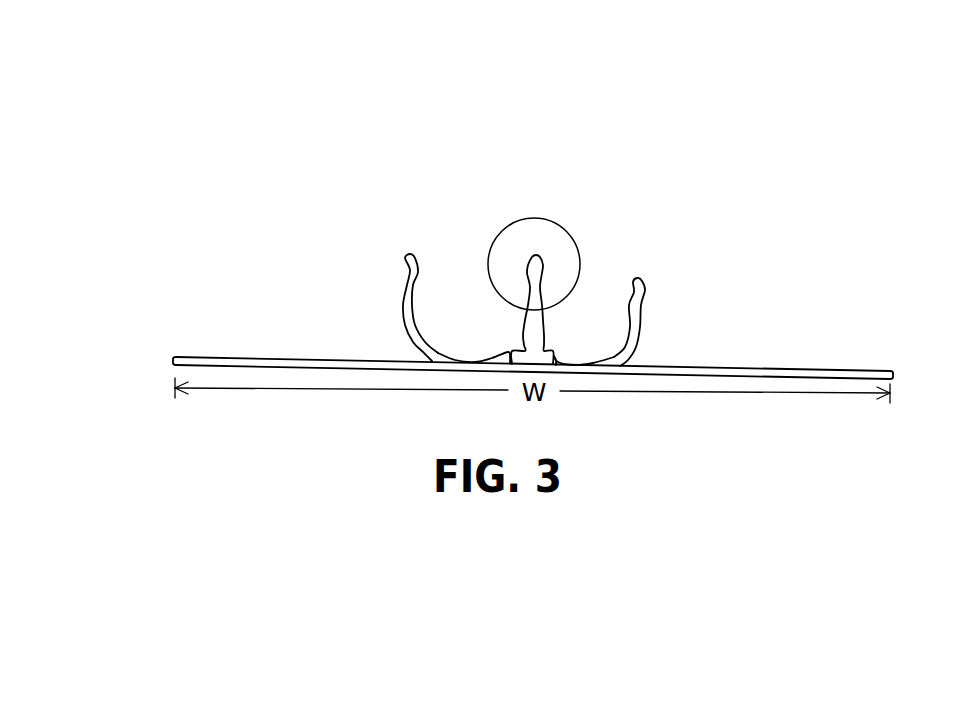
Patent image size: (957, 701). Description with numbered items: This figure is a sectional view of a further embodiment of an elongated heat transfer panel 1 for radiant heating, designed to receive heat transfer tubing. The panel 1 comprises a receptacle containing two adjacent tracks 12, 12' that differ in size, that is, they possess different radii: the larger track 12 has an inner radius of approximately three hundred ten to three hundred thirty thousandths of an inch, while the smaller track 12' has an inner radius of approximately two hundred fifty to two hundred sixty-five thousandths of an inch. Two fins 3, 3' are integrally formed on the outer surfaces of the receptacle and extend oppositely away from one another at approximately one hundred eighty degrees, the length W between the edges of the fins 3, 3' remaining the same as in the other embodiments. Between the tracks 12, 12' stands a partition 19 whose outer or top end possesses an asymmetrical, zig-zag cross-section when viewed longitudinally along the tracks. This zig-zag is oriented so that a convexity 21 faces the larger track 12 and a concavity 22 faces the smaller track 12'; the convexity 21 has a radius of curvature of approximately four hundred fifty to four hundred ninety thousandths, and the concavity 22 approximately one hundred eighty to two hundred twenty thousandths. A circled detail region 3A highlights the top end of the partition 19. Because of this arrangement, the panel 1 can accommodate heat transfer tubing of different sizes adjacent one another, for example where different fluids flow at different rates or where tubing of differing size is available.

The heat transfer panel 1 is at (540, 247).
The fin 3 is at (349, 308).
The fin 3' is at (724, 316).
The detail region 3A is at (508, 226).
The track 12 is at (434, 259).
The track 12' is at (620, 261).
The partition 19 is at (535, 243).
The convexity 21 is at (517, 272).
The concavity 22 is at (543, 274).